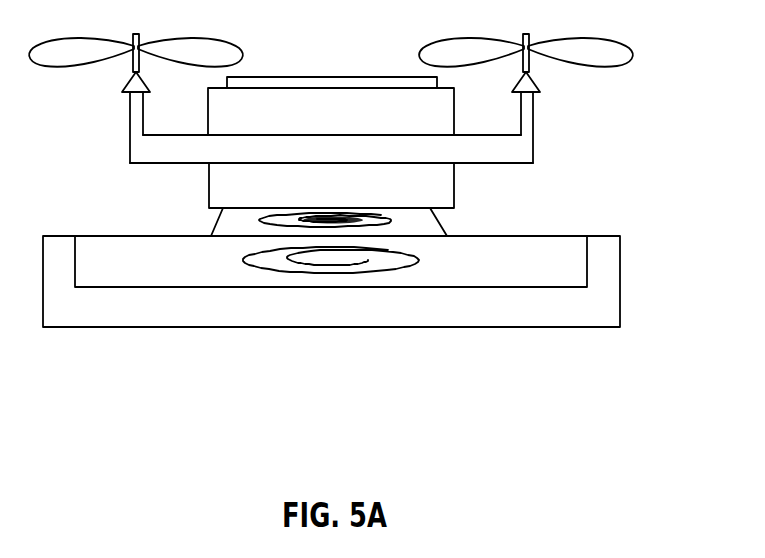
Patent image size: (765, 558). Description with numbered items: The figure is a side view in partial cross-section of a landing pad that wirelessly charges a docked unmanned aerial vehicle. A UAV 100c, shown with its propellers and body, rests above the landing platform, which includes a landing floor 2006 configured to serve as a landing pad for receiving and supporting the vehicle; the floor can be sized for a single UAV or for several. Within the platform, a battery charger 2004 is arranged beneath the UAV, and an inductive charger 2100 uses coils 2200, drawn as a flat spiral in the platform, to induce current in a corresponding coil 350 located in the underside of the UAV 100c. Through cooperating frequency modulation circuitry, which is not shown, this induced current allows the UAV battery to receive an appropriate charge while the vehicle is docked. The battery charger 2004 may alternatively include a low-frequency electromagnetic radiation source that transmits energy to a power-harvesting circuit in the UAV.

The UAV 100c is at (307, 77).
The coil 350 is at (445, 221).
The inductive charger 2100 is at (367, 258).
The battery charger 2004 is at (588, 283).
The landing floor 2006 is at (613, 327).
The coils 2200 is at (303, 270).